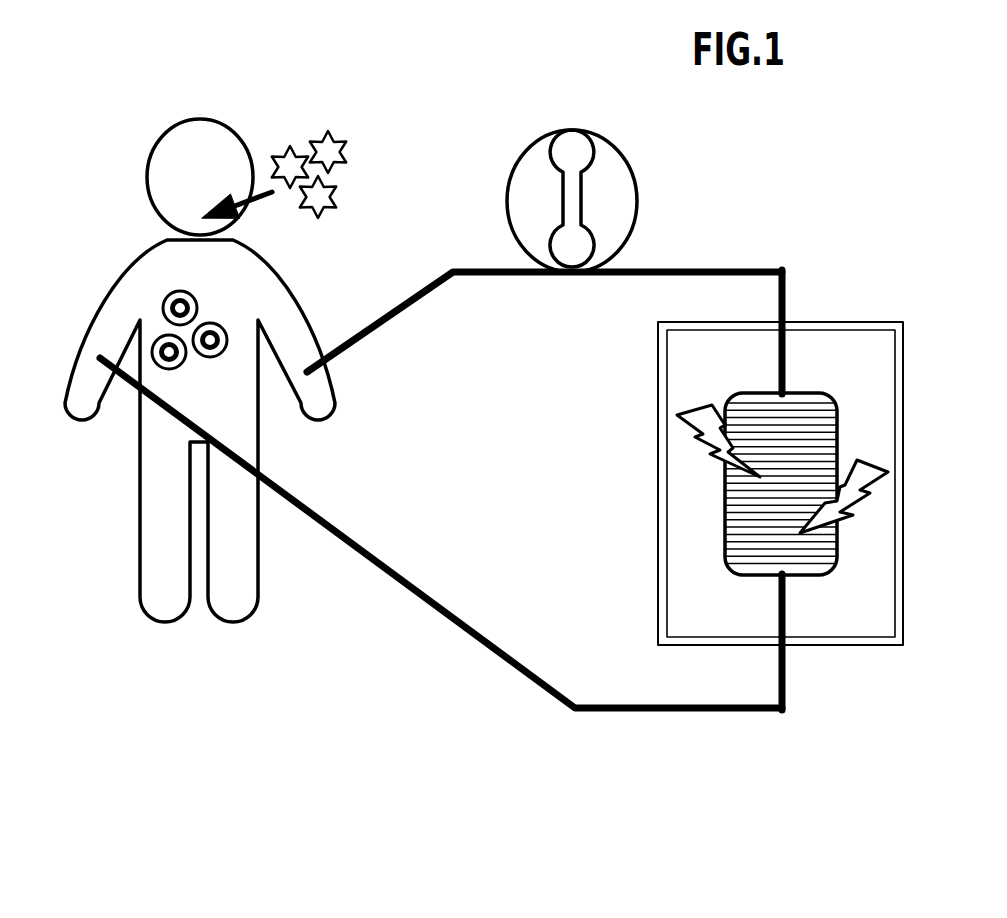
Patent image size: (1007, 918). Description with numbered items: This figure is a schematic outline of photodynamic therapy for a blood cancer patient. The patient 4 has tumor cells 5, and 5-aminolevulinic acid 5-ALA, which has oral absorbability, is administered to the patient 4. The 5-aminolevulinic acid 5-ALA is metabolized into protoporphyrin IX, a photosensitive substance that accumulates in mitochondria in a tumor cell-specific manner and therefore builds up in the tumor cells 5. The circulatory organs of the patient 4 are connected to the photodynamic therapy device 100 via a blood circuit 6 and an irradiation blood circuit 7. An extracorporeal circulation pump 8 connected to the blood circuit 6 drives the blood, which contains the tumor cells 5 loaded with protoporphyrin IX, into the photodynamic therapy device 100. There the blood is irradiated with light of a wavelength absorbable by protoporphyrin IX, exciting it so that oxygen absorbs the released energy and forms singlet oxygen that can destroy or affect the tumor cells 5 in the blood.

The patient 4 is at (147, 181).
The tumor cells 5 is at (165, 296).
The 5-aminolevulinic acid 5-ALA is at (316, 175).
The blood circuit 6 is at (725, 270).
The irradiation blood circuit 7 is at (785, 291).
The extracorporeal circulation pump 8 is at (541, 140).
The photodynamic therapy device 100 is at (904, 552).